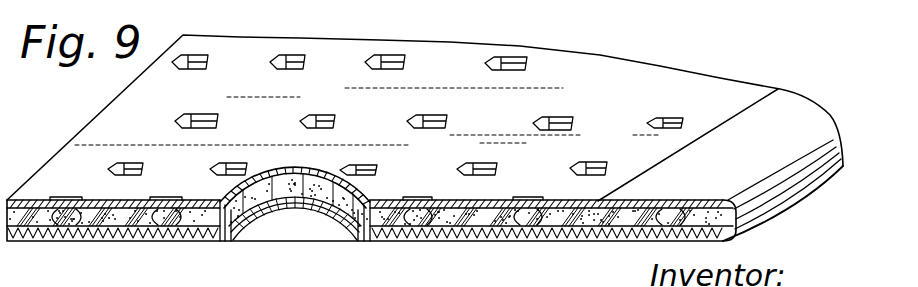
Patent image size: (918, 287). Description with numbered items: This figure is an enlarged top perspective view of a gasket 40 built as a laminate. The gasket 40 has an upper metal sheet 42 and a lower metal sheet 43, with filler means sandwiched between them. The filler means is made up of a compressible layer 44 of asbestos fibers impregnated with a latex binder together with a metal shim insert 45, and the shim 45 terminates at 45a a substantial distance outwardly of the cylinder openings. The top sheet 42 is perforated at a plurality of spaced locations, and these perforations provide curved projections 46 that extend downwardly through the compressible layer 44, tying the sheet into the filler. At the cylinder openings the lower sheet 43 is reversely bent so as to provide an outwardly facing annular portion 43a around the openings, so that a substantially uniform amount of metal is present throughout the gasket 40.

The gasket 40 is at (631, 63).
The upper metal sheet 42 is at (443, 62).
The lower metal sheet 43 is at (182, 237).
The outwardly facing annular portion 43a is at (675, 163).
The compressible layer 44 is at (444, 226).
The metal shim insert 45 is at (88, 232).
The shim termination 45a is at (613, 238).
The curved projections 46 is at (50, 217).